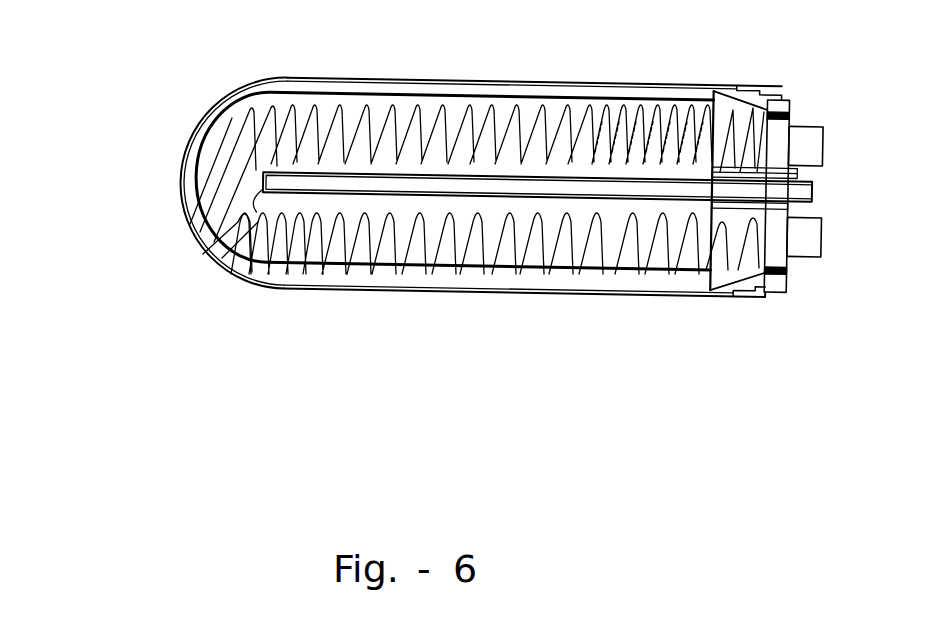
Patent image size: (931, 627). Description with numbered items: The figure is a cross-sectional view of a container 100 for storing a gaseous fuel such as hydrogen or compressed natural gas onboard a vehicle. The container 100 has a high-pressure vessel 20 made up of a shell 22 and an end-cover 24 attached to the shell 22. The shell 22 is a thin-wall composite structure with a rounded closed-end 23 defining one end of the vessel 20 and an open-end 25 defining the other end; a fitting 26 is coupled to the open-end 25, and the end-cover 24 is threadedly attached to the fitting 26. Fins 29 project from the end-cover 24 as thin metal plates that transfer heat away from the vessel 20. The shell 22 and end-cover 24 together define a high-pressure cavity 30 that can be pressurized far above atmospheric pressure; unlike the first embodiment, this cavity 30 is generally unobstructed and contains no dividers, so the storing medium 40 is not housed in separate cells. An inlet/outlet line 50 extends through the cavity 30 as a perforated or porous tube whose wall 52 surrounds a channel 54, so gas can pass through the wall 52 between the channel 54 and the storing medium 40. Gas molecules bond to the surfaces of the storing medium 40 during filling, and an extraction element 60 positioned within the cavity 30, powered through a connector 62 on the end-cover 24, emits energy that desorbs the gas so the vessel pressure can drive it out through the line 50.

The container 100 is at (134, 225).
The high-pressure vessel 20 is at (793, 92).
The shell 22 is at (643, 296).
The closed-end 23 is at (182, 182).
The end-cover 24 is at (788, 120).
The open-end 25 is at (773, 290).
The fitting 26 is at (782, 281).
The fins 29 is at (817, 145).
The cavity 30 is at (343, 280).
The storing medium 40 is at (530, 247).
The inlet/outlet line 50 is at (813, 202).
The wall 52 is at (237, 265).
The channel 54 is at (430, 188).
The extraction element 60 is at (249, 92).
The connector 62 is at (797, 175).